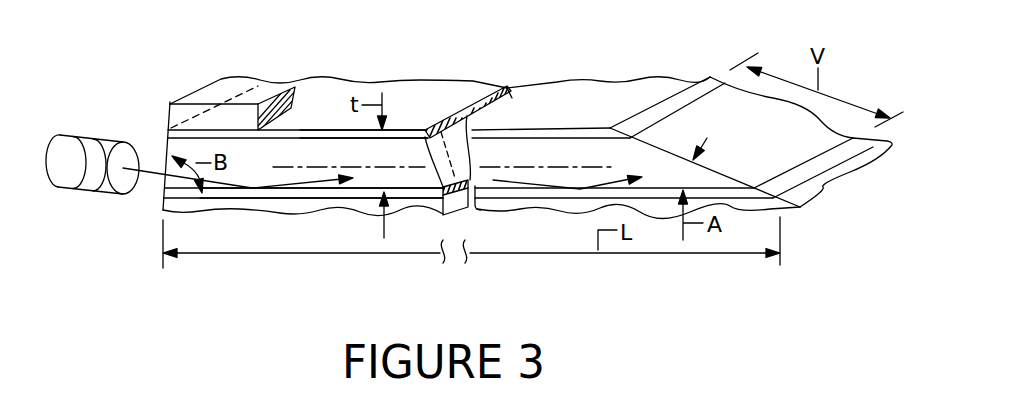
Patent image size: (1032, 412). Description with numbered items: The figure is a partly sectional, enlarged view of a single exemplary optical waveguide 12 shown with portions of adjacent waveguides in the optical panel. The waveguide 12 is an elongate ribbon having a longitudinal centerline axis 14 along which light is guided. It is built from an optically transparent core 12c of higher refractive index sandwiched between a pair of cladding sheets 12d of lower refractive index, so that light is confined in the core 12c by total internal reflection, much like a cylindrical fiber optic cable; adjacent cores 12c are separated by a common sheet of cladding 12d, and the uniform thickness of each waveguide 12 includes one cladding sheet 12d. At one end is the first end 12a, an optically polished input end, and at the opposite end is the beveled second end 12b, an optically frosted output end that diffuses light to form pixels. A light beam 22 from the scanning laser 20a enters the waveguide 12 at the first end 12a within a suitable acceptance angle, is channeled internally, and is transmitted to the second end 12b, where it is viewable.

The optical waveguide 12 is at (637, 71).
The first end 12a is at (165, 150).
The second end 12b is at (810, 130).
The core 12c is at (258, 93).
The cladding sheet 12d is at (398, 130).
The longitudinal centerline axis 14 is at (505, 165).
The scanning laser 20a is at (73, 191).
The light beam 22 is at (143, 171).